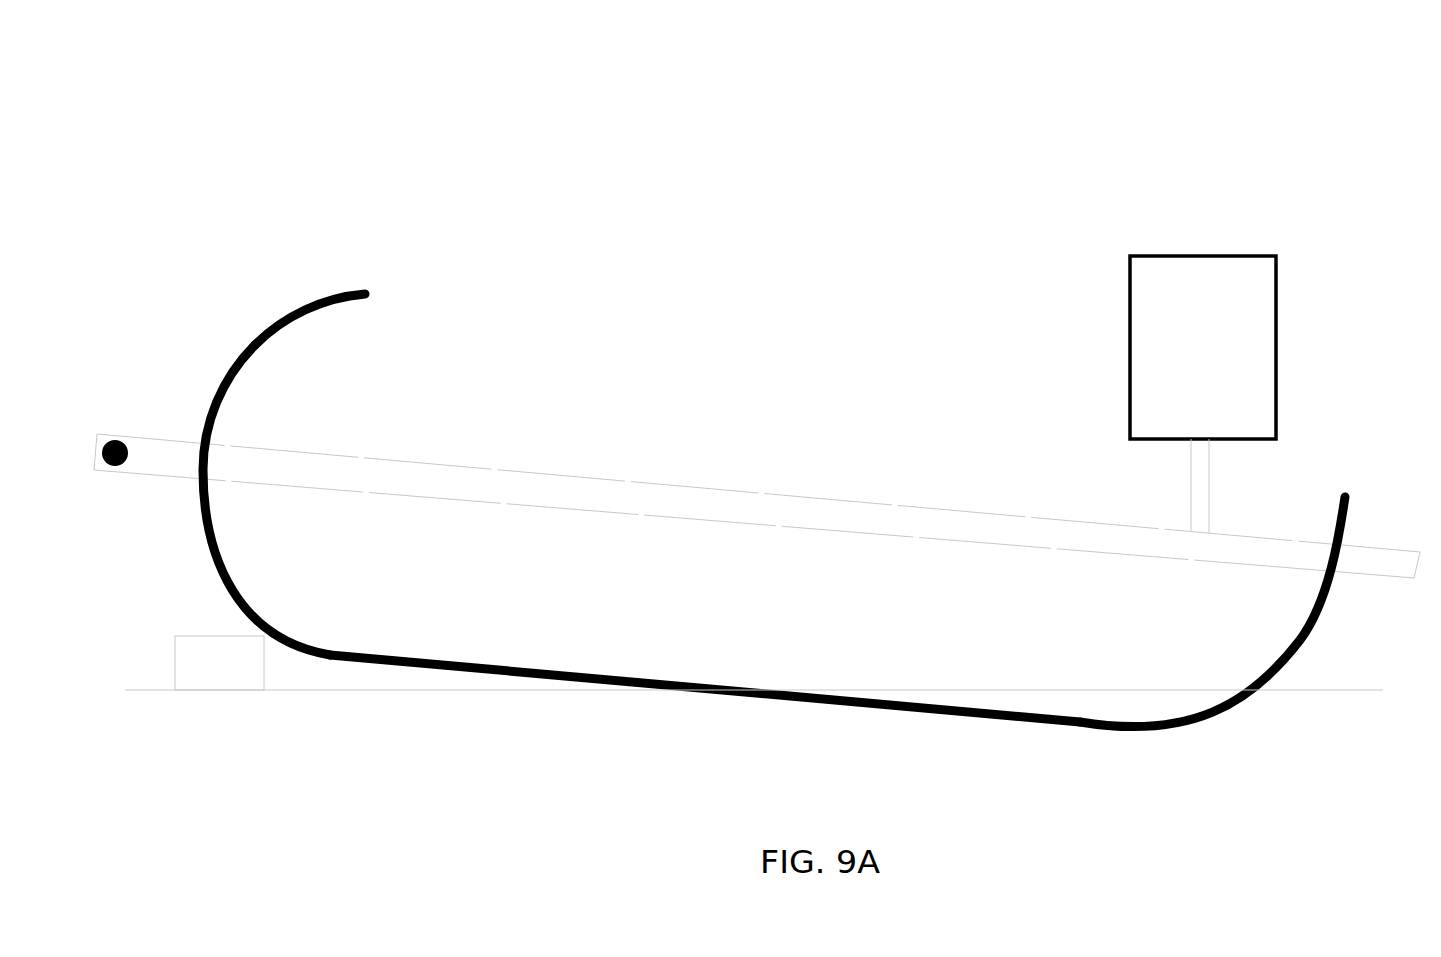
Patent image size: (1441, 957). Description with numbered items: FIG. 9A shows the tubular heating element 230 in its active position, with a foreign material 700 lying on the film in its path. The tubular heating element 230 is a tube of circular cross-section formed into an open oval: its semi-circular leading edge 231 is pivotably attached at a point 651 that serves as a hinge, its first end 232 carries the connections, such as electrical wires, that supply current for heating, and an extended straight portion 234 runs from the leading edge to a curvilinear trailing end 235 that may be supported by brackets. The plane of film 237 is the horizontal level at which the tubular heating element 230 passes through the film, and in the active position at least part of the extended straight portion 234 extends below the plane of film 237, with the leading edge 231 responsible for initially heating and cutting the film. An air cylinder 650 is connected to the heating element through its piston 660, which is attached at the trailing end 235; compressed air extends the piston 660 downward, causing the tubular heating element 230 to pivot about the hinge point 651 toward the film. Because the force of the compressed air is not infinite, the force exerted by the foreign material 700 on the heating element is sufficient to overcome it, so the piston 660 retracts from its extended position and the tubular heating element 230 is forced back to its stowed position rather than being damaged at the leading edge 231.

The tubular heating element 230 is at (283, 195).
The leading edge 231 is at (213, 402).
The first end 232 is at (376, 316).
The extended straight portion 234 is at (833, 702).
The trailing end 235 is at (1285, 670).
The plane of film 237 is at (754, 705).
The air cylinder 650 is at (1203, 347).
The point 651 is at (113, 467).
The piston 660 is at (1191, 489).
The foreign material 700 is at (217, 690).